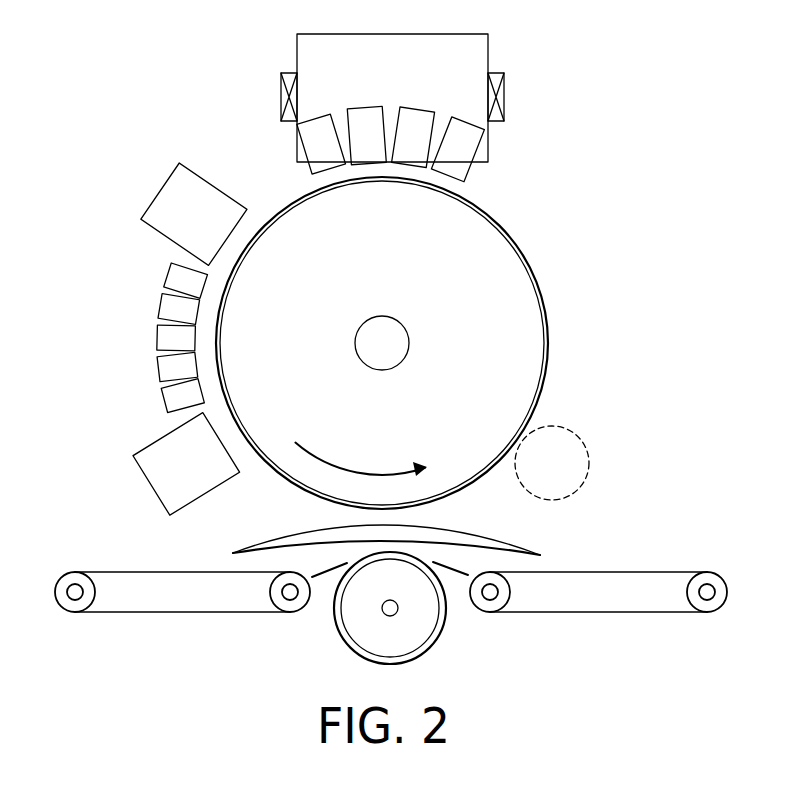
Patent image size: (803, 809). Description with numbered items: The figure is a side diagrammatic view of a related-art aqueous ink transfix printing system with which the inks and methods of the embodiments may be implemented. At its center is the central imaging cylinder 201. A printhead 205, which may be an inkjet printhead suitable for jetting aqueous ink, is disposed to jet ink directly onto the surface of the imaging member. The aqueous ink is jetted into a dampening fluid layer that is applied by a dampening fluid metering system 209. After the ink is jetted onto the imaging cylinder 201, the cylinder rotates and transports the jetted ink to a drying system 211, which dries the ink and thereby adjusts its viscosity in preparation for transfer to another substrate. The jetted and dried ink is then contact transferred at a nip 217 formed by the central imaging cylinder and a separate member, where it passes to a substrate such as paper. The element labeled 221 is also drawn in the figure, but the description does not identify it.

The central imaging cylinder 201 is at (542, 312).
The printhead 205 is at (498, 148).
The dampening fluid metering system 209 is at (145, 178).
The drying system 211 is at (148, 314).
The nip 217 is at (460, 635).
The cleaning roller 221 is at (578, 415).